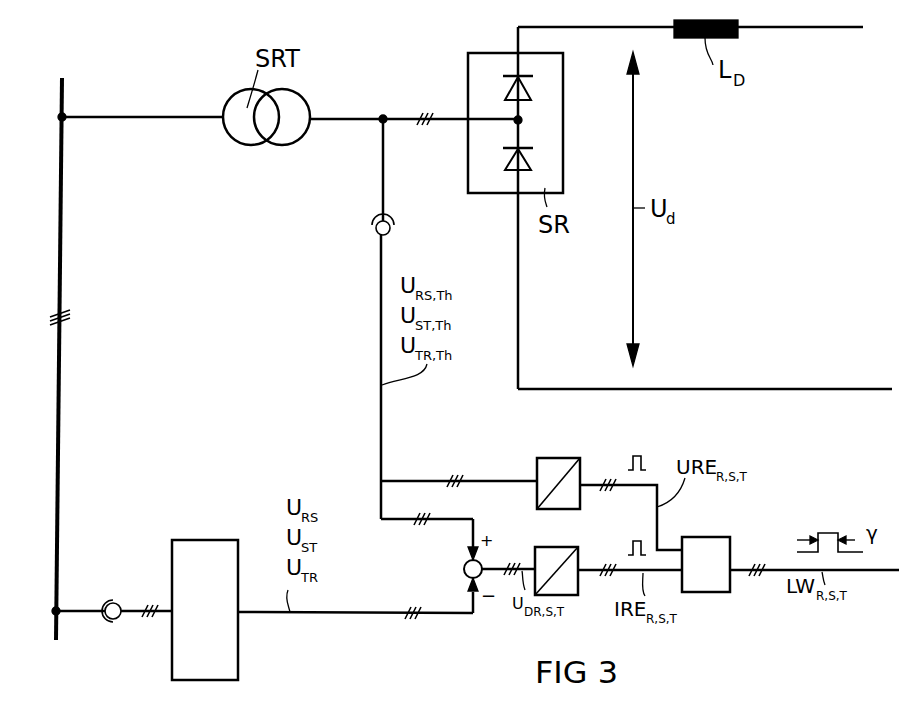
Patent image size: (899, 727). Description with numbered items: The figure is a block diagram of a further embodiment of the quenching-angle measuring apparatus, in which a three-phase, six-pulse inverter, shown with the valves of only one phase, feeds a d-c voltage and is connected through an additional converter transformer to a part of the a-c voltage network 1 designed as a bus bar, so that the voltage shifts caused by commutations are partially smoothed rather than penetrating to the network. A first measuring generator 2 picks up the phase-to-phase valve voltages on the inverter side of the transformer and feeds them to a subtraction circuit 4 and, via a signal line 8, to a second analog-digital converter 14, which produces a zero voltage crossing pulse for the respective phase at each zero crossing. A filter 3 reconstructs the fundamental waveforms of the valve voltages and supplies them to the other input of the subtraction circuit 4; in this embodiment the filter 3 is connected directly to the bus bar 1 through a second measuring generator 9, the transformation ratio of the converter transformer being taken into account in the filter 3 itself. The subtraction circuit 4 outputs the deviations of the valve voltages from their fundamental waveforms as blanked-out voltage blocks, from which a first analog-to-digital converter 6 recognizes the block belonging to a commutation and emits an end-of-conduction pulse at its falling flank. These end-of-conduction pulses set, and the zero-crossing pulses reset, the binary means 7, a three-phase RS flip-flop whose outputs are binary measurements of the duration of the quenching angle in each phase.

The a-c voltage network 1 is at (62, 208).
The first measuring generator 2 is at (374, 222).
The filter 3 is at (203, 540).
The subtraction circuit 4 is at (463, 569).
The first analog-to-digital converter 6 is at (568, 547).
The binary means 7 is at (714, 543).
The signal line 8 is at (507, 481).
The second measuring generator 9 is at (113, 602).
The second analog-digital converter 14 is at (562, 467).